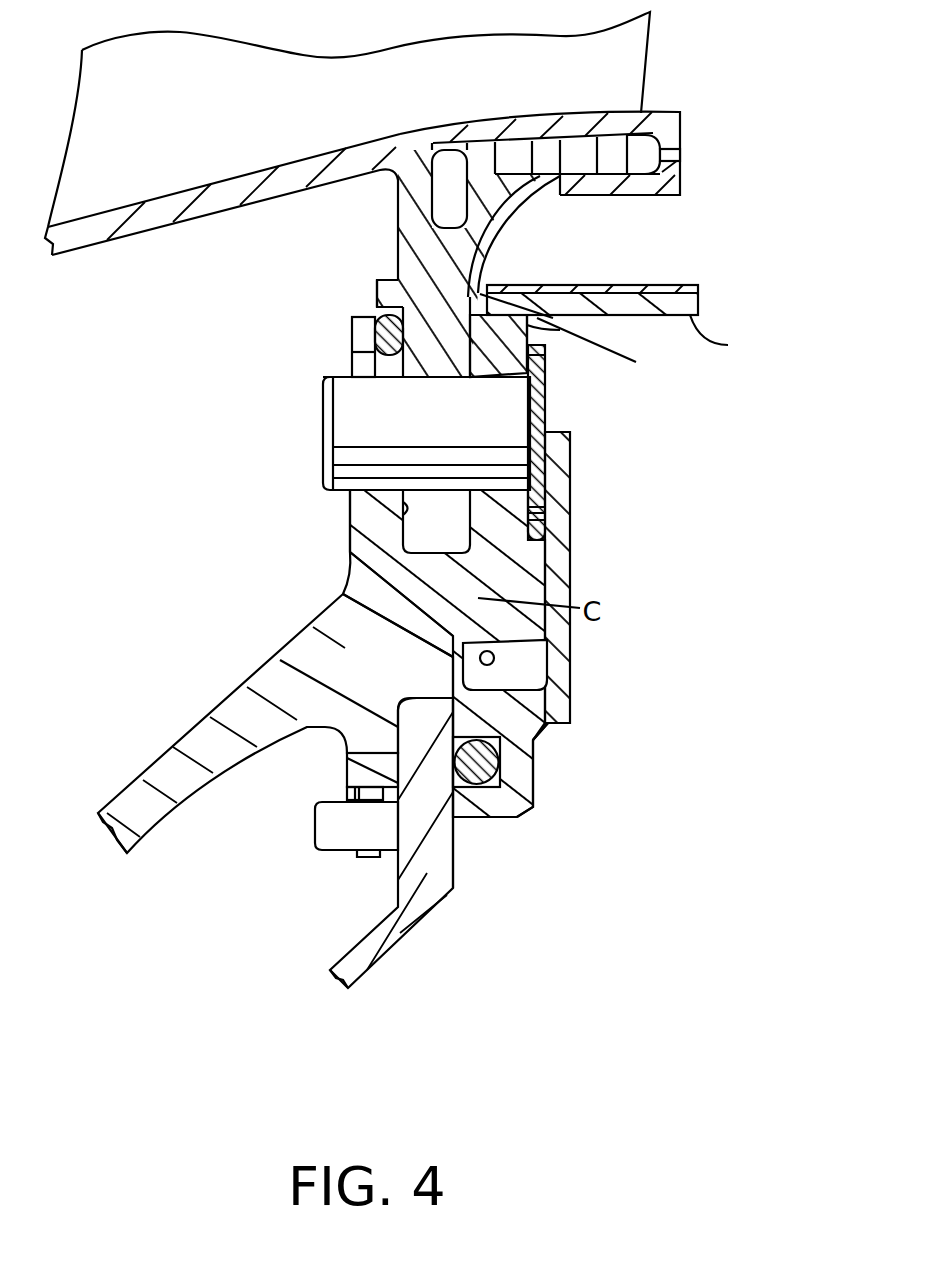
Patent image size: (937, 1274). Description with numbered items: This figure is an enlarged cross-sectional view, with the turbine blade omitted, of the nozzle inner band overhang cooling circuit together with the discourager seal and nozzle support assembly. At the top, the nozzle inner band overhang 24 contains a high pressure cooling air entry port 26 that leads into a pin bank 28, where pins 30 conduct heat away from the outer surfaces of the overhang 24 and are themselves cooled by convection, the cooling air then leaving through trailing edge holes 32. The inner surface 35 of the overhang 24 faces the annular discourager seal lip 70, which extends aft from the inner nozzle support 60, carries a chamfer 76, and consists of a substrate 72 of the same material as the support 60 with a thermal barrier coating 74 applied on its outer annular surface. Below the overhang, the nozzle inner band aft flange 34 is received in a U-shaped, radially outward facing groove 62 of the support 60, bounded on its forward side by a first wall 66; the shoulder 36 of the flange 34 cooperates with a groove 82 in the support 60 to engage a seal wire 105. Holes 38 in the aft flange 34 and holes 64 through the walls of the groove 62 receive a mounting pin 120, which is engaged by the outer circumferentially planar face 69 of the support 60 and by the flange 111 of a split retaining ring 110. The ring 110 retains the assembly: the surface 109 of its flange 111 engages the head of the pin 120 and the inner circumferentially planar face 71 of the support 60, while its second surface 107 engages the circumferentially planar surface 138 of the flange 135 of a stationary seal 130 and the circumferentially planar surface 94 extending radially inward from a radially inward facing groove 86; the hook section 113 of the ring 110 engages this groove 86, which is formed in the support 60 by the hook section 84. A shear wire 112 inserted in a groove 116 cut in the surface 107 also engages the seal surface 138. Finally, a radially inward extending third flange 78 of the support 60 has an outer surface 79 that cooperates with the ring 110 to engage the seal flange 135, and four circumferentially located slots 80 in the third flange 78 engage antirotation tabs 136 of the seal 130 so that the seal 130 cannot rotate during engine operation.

The nozzle inner band overhang 24 is at (675, 110).
The high pressure cooling air entry port 26 is at (380, 207).
The pin bank 28 is at (535, 103).
The pins 30 is at (487, 160).
The trailing edge holes 32 is at (703, 155).
The nozzle inner band aft flange 34 is at (397, 258).
The inner surface 35 is at (635, 195).
The shoulder 36 is at (377, 295).
The holes 38 is at (435, 380).
The inner nozzle support 60 is at (157, 757).
The U-shaped circumferential groove 62 is at (408, 540).
The holes 64 is at (330, 380).
The first wall 66 is at (350, 505).
The outer circumferentially planar face 69 is at (543, 355).
The annular discourager seal lip 70 is at (704, 300).
The inner circumferentially planar face 71 is at (570, 565).
The substrate 72 is at (560, 285).
The thermal barrier coating 74 is at (612, 285).
The chamfer 76 is at (480, 287).
The third flange 78 is at (347, 773).
The outer surface 79 is at (347, 753).
The slots 80 is at (318, 820).
The groove 82 is at (352, 352).
The hook section 84 is at (450, 634).
The circumferential groove 86 is at (490, 640).
The circumferentially planar surface 94 is at (400, 680).
The seal wire 105 is at (377, 316).
The second surface 107 is at (443, 660).
The surface 109 is at (537, 527).
The split retaining ring 110 is at (570, 667).
The flange 111 is at (570, 482).
The shear wire 112 is at (517, 763).
The hook section 113 is at (547, 723).
The groove 116 is at (510, 815).
The pin 120 is at (323, 430).
The stationary seal 130 is at (378, 972).
The flange 135 is at (450, 897).
The antirotation tabs 136 is at (333, 853).
The circumferentially planar surface 138 is at (453, 838).